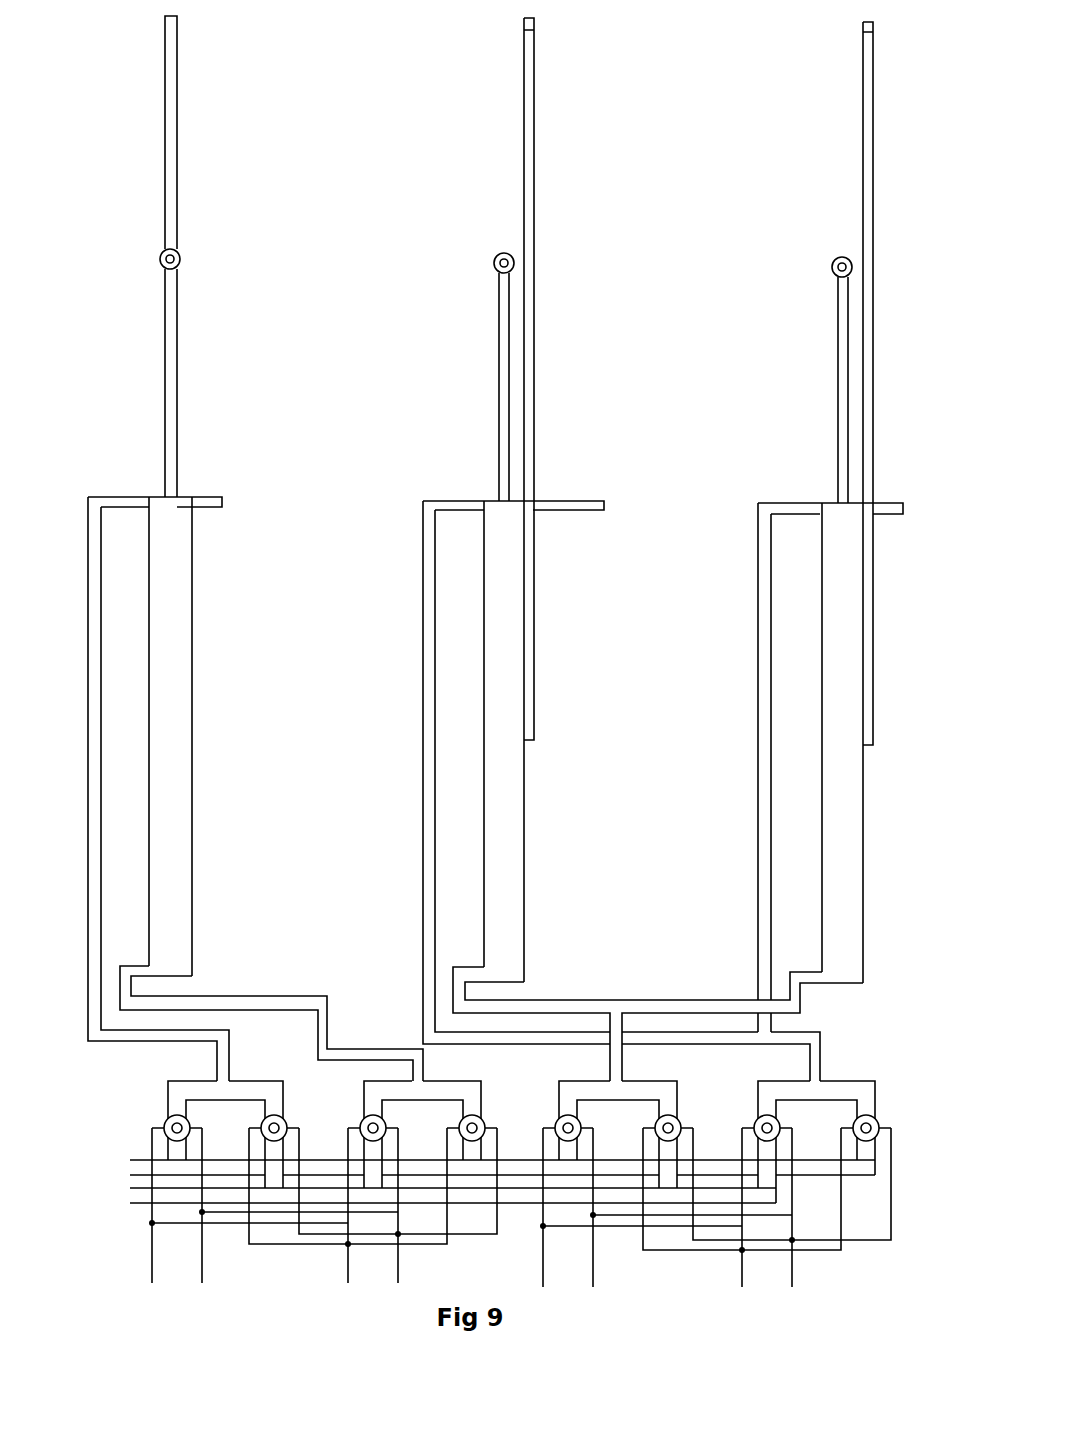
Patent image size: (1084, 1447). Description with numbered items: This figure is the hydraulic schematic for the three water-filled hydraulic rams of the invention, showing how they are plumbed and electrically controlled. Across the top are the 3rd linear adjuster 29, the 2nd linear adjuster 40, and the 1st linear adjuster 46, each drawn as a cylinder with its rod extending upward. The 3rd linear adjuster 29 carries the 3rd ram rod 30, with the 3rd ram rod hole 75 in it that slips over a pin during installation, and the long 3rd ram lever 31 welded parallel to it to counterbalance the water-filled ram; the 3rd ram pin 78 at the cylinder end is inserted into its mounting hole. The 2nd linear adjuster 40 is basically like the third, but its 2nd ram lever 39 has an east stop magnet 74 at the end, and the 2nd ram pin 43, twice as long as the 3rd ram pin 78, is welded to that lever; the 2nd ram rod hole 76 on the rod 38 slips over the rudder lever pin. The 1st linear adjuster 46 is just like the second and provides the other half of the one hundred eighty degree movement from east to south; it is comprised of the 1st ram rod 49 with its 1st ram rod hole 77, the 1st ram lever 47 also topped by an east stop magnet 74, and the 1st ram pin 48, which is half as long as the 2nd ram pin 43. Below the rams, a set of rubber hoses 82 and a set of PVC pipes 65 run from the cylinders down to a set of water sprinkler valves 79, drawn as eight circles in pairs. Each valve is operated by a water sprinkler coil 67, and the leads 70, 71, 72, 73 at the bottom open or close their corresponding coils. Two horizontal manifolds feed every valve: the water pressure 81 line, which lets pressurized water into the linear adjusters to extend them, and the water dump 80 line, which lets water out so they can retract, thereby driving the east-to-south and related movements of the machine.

The 3rd linear adjuster 29 is at (180, 734).
The 3rd ram rod 30 is at (178, 376).
The 3rd ram lever 31 is at (178, 96).
The connecting rod 38 is at (498, 380).
The 2nd ram lever 39 is at (523, 100).
The 2nd linear adjuster 40 is at (512, 807).
The 2nd ram pin 43 is at (605, 508).
The 1st linear adjuster 46 is at (850, 808).
The 1st ram lever 47 is at (865, 103).
The 1st ram pin 48 is at (888, 512).
The 1st ram rod 49 is at (838, 384).
The set of PVC pipes 65 is at (584, 1088).
The water sprinkler coils 67 is at (364, 1120).
The lead 70 is at (177, 1222).
The lead 71 is at (373, 1222).
The lead 72 is at (568, 1222).
The lead 73 is at (767, 1223).
The east stop magnet 74 is at (862, 24).
The 3rd ram rod hole 75 is at (181, 259).
The 2nd ram rod hole 76 is at (494, 261).
The 1st ram rod hole 77 is at (832, 265).
The 3rd ram pin 78 is at (222, 503).
The set of water sprinkler valves 79 is at (163, 1125).
The water dump 80 is at (135, 1163).
The water pressure 81 is at (135, 1192).
The set of rubber hoses 82 is at (297, 1002).